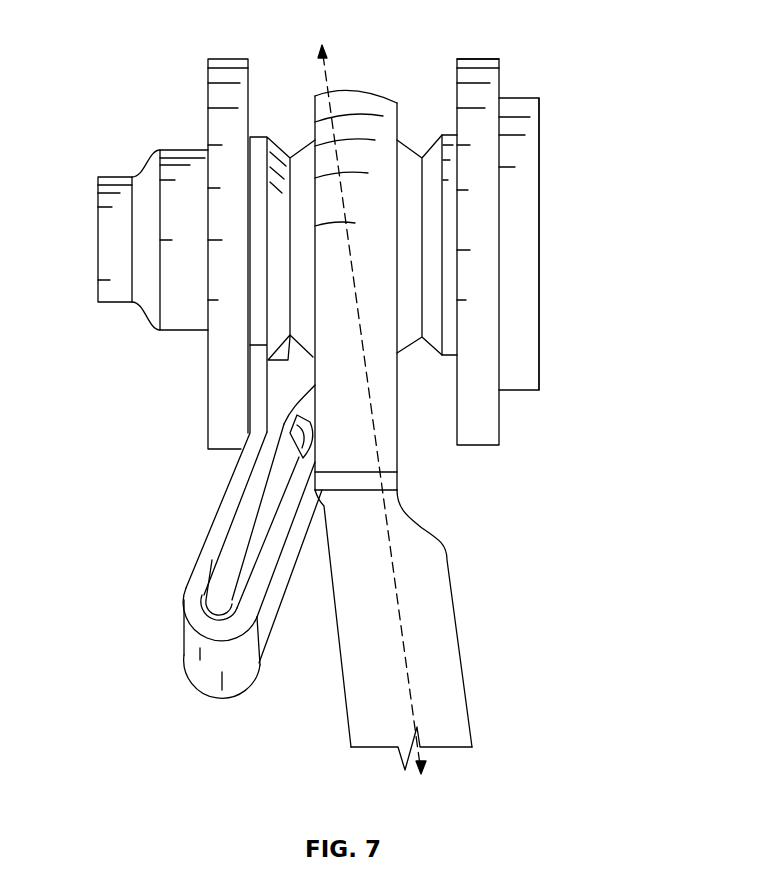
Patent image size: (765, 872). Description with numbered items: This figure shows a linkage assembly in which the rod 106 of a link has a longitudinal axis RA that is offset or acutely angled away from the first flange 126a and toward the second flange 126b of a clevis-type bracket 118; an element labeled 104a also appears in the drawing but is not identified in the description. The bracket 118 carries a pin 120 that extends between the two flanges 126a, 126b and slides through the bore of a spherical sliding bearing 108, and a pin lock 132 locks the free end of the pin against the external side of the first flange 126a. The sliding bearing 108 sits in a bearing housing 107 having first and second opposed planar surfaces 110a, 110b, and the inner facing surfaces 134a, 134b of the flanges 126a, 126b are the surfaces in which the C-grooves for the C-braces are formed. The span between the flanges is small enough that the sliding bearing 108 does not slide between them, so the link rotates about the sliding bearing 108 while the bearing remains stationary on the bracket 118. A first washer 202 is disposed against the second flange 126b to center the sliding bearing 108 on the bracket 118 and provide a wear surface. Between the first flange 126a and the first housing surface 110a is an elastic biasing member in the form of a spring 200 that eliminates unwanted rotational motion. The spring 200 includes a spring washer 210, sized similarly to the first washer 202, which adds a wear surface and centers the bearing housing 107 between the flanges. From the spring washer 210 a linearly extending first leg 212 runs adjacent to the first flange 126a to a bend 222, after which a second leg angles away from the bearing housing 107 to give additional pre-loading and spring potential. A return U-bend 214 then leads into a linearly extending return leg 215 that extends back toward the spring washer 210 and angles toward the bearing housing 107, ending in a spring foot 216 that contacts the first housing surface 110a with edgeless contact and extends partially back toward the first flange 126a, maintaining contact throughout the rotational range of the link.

The bearing assembly 104a is at (547, 71).
The rod 106 is at (440, 608).
The bearing housing 107 is at (353, 89).
The sliding bearing 108 is at (300, 157).
The first housing surface 110a is at (313, 370).
The second planar surface 110b is at (400, 448).
The bracket 118 is at (507, 29).
The pin 120 is at (541, 215).
The first flange 126a is at (227, 135).
The second flange 126b is at (487, 325).
The pin lock 132 is at (112, 303).
The inner facing surface of first flange 134a is at (249, 80).
The second inner facing surface 134b is at (457, 80).
The spring 200 is at (156, 544).
The first washer 202 is at (442, 134).
The spring washer 210 is at (257, 192).
The first leg 212 is at (250, 395).
The return U-bend 214 is at (190, 655).
The return leg 215 is at (270, 616).
The spring foot 216 is at (298, 436).
The bend 222 is at (315, 386).
The longitudinal axis RA is at (377, 427).